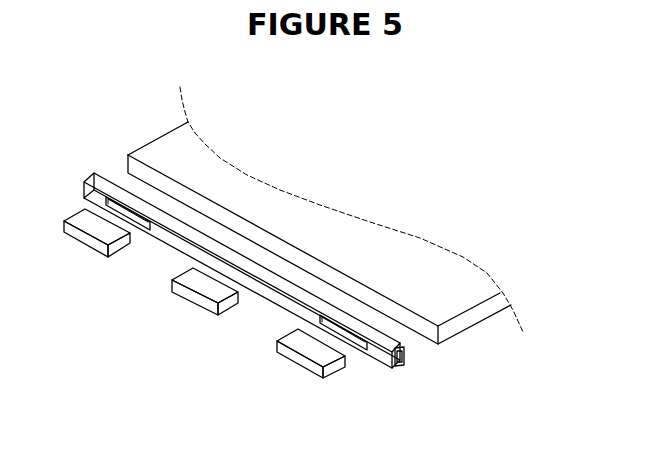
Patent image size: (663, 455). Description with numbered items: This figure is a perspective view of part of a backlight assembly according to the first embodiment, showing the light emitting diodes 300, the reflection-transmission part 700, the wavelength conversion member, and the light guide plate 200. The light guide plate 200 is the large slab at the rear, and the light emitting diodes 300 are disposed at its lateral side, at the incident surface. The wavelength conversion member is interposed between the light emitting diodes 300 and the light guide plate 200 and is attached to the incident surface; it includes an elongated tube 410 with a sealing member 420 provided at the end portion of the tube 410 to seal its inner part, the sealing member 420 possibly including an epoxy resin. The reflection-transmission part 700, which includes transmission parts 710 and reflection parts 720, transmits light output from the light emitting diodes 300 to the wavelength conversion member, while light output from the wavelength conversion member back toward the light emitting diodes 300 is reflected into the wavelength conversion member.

The light guide plate 200 is at (317, 216).
The light emitting diodes 300 is at (95, 247).
The tube 410 is at (373, 369).
The sealing member 420 is at (398, 367).
The reflection-transmission part 700 is at (247, 307).
The transmission parts 710 is at (338, 348).
The reflection parts 720 is at (282, 304).